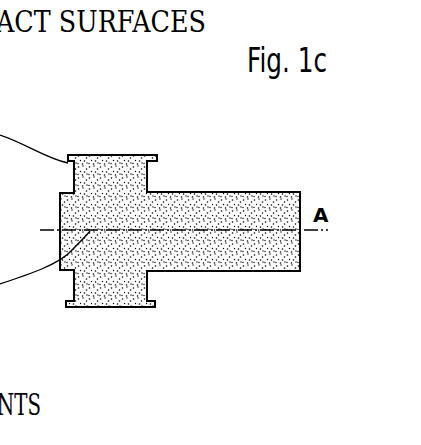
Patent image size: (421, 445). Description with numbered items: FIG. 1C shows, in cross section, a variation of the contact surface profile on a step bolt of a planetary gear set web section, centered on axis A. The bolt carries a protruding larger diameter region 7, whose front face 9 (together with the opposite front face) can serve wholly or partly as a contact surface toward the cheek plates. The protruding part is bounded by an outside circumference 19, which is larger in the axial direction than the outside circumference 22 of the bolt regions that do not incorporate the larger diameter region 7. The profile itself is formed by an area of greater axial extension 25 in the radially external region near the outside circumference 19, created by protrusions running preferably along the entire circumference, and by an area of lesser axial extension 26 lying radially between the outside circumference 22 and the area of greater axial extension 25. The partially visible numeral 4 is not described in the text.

The neck portion 4 is at (75, 176).
The larger diameter region 7 is at (110, 164).
The front face 9 is at (155, 162).
The outside circumference 19 is at (131, 308).
The outside circumference 22 is at (221, 193).
The area of greater axial extension 25 is at (89, 307).
The area of lesser axial extension 26 is at (138, 284).